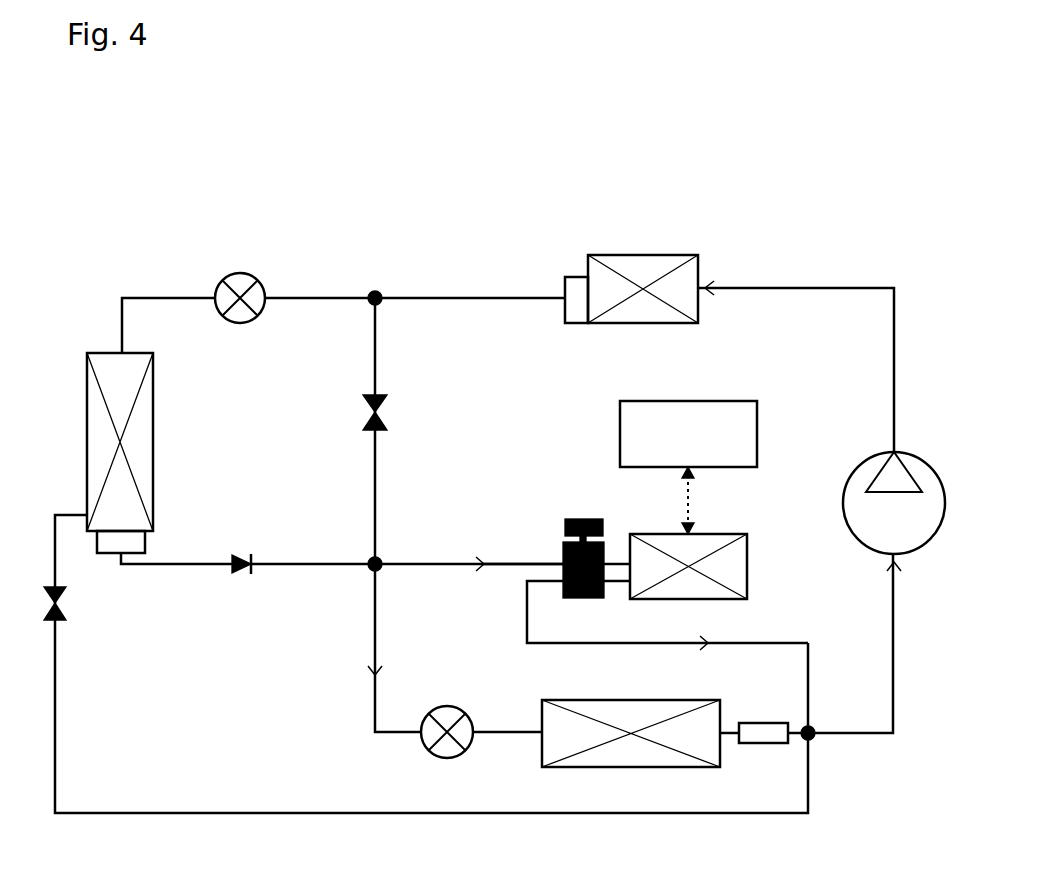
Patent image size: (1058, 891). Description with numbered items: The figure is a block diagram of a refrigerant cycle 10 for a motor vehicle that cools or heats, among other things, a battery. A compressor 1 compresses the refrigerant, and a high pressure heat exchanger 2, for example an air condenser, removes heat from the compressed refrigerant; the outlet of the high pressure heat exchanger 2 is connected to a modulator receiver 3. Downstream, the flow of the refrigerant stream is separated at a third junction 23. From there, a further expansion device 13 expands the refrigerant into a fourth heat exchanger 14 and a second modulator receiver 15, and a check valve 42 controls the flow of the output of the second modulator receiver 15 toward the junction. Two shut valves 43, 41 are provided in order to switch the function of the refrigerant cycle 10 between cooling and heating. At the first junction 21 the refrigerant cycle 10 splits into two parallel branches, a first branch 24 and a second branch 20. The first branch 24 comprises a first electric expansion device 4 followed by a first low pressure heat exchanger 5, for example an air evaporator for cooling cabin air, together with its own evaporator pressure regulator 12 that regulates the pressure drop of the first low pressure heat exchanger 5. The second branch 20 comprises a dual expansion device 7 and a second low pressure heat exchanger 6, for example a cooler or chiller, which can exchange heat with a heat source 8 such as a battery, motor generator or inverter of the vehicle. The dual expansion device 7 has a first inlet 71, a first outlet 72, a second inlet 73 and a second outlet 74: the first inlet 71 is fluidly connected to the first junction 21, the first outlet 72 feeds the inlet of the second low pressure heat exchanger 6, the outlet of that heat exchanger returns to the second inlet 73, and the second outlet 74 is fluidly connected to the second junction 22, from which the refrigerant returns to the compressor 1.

The compressor 1 is at (901, 541).
The high pressure heat exchanger 2 is at (630, 272).
The modulator receiver 3 is at (573, 290).
The first electric expansion device 4 is at (442, 748).
The first low pressure heat exchanger 5 is at (610, 748).
The second low pressure heat exchanger 6 is at (728, 557).
The dual expansion device 7 is at (580, 518).
The heat source 8 is at (743, 427).
The refrigerant cycle 10 is at (862, 218).
The evaporator pressure regulator 12 is at (758, 735).
The further expansion device 13 is at (238, 288).
The fourth heat exchanger 14 is at (137, 460).
The second modulator receiver 15 is at (133, 547).
The second branch 20 is at (484, 630).
The first junction 21 is at (368, 573).
The second junction 22 is at (812, 738).
The third junction 23 is at (373, 295).
The first branch 24 is at (340, 742).
The shut valve 41 is at (62, 617).
The check valve 42 is at (228, 570).
The shut valve 43 is at (383, 418).
The first inlet 71 is at (557, 562).
The first outlet 72 is at (608, 562).
The second inlet 73 is at (608, 587).
The second outlet 74 is at (558, 585).